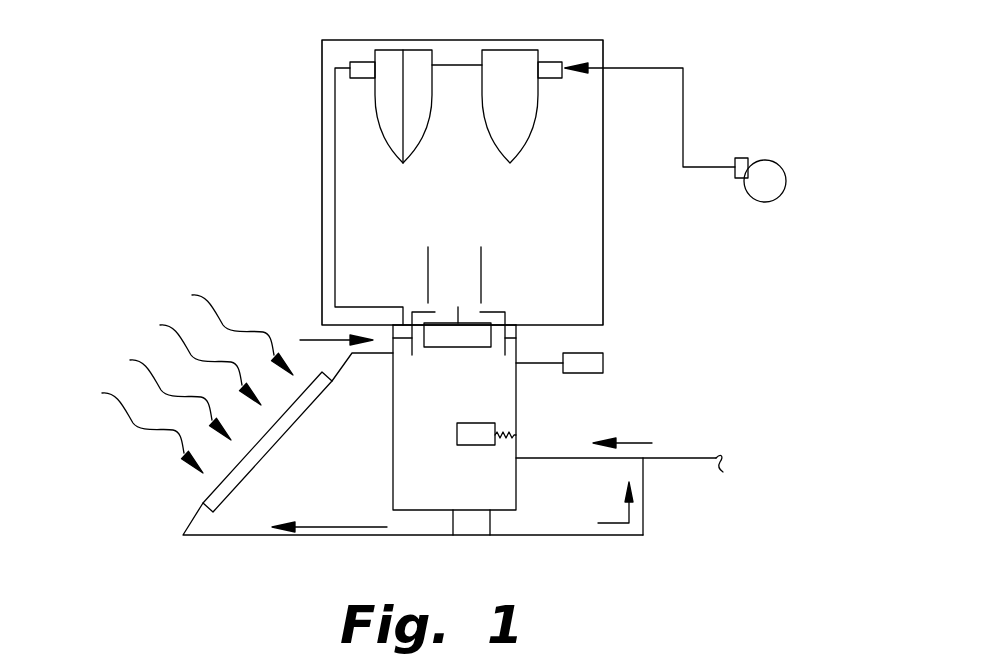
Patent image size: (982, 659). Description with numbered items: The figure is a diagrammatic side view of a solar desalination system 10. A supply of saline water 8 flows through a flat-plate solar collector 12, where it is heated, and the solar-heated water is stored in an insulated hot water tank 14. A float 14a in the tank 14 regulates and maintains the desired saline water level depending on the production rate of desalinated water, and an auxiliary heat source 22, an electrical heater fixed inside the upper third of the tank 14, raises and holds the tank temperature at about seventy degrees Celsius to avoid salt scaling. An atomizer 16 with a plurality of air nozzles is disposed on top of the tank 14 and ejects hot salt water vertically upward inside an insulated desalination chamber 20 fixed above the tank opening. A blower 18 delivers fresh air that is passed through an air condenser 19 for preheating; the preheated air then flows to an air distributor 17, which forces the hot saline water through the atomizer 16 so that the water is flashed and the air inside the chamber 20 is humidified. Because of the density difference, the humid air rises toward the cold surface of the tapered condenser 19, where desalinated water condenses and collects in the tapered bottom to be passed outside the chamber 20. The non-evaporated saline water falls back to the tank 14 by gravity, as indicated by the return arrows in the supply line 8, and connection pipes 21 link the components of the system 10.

The supply of saline water 8 is at (667, 458).
The system 10 is at (221, 171).
The solar collector 12 is at (210, 496).
The insulated hot water tank 14 is at (490, 513).
The float 14a is at (477, 445).
The atomizer 16 is at (508, 262).
The air distributor 17 is at (458, 347).
The blower 18 is at (776, 162).
The air condenser 19 is at (551, 156).
The desalination chamber 20 is at (465, 40).
The connection pipes 21 is at (334, 260).
The auxiliary heat source 22 is at (603, 363).